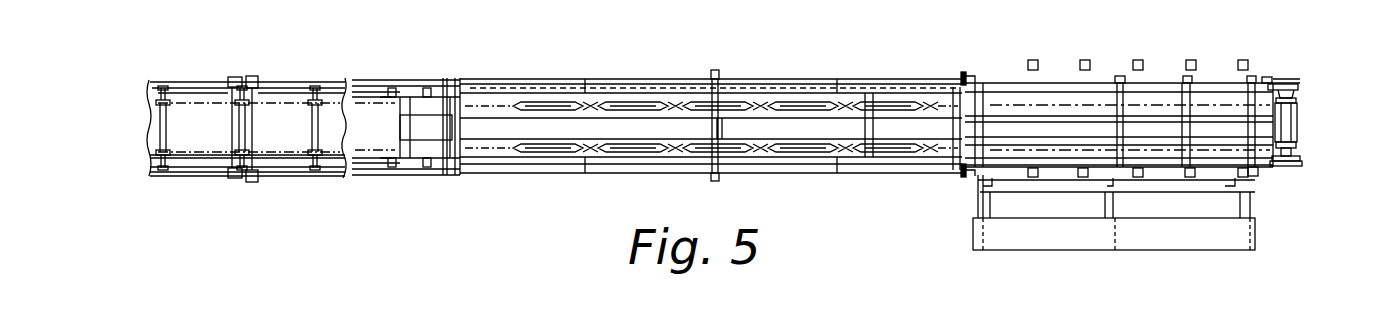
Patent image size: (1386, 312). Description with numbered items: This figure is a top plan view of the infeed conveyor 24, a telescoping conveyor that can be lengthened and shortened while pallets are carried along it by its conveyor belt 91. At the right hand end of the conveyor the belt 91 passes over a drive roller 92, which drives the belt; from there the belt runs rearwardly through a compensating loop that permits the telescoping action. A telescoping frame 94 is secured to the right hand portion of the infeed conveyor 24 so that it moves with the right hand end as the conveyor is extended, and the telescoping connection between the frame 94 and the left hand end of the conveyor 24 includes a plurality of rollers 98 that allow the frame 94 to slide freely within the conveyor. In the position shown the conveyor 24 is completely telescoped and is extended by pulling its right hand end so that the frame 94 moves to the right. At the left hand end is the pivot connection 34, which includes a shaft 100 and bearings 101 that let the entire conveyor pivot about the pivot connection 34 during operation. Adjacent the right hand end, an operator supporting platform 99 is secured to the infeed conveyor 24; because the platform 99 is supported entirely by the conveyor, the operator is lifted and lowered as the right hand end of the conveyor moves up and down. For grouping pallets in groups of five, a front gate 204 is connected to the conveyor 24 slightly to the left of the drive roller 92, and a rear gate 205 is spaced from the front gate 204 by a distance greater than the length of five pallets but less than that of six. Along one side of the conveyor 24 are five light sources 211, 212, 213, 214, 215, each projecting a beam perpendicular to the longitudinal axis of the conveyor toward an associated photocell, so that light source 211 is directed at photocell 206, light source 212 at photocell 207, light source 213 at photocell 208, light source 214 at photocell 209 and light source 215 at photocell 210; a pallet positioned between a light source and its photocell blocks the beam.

The infeed conveyor 24 is at (871, 180).
The pivot connection 34 is at (230, 184).
The conveyor belt 91 is at (658, 155).
The drive roller 92 is at (1299, 118).
The telescoping frame 94 is at (569, 160).
The rollers 98 is at (803, 103).
The operator supporting platform 99 is at (1048, 238).
The shaft 100 is at (250, 130).
The bearings 101 is at (249, 182).
The front gate 204 is at (1268, 80).
The rear gate 205 is at (967, 72).
The photocell 206 is at (1034, 59).
The photocell 207 is at (1087, 59).
The photocell 208 is at (1144, 44).
The photocell 209 is at (1202, 44).
The photocell 210 is at (1256, 44).
The light source 211 is at (1034, 178).
The light source 212 is at (1083, 178).
The light source 213 is at (1137, 178).
The light source 214 is at (1189, 178).
The light source 215 is at (1246, 178).